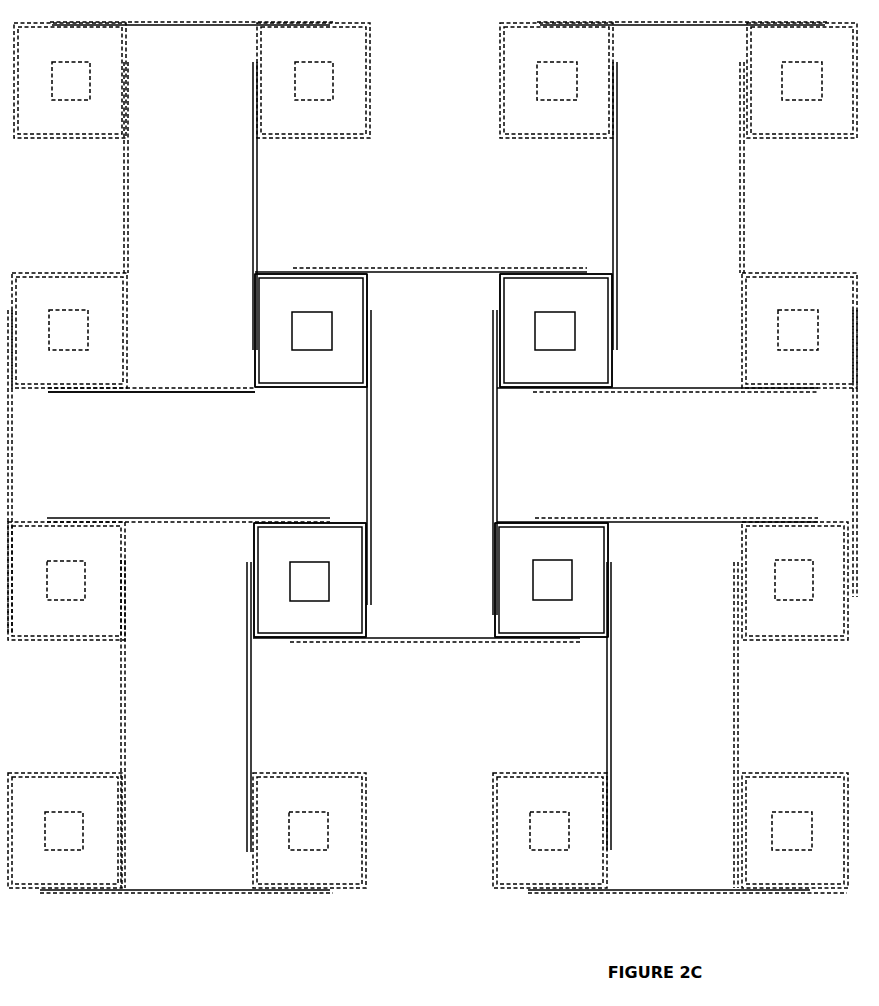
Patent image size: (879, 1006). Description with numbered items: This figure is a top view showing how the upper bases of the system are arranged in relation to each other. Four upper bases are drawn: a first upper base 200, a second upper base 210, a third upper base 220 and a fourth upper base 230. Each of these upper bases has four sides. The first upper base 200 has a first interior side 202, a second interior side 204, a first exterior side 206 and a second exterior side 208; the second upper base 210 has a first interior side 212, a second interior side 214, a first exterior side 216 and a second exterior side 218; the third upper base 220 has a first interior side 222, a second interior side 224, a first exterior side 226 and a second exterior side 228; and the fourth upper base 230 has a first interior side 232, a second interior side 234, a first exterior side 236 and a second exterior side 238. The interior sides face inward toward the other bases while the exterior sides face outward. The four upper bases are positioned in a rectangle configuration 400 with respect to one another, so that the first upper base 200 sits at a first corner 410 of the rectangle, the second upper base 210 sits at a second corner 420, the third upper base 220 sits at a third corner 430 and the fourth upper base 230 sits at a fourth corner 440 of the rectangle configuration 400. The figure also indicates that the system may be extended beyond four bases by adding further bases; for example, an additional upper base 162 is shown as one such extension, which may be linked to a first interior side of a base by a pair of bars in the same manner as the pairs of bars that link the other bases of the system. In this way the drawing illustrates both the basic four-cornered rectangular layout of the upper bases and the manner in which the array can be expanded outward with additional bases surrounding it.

The additional upper base 162 is at (32, 393).
The first upper base 200 is at (301, 299).
The first interior side 202 is at (353, 392).
The second interior side 204 is at (368, 292).
The first exterior side 206 is at (273, 268).
The second exterior side 208 is at (250, 372).
The second upper base 210 is at (542, 299).
The first interior side 212 is at (497, 290).
The second interior side 214 is at (513, 391).
The first exterior side 216 is at (590, 268).
The second exterior side 218 is at (610, 363).
The third upper base 220 is at (537, 549).
The first interior side 222 is at (497, 615).
The second interior side 224 is at (512, 517).
The first exterior side 226 is at (580, 640).
The second exterior side 228 is at (608, 545).
The fourth upper base 230 is at (299, 549).
The first interior side 232 is at (342, 522).
The second interior side 234 is at (368, 624).
The first exterior side 236 is at (270, 642).
The second exterior side 238 is at (253, 545).
The rectangle configuration 400 is at (383, 270).
The first corner 410 is at (253, 235).
The second corner 420 is at (618, 229).
The third corner 430 is at (612, 612).
The fourth corner 440 is at (247, 632).